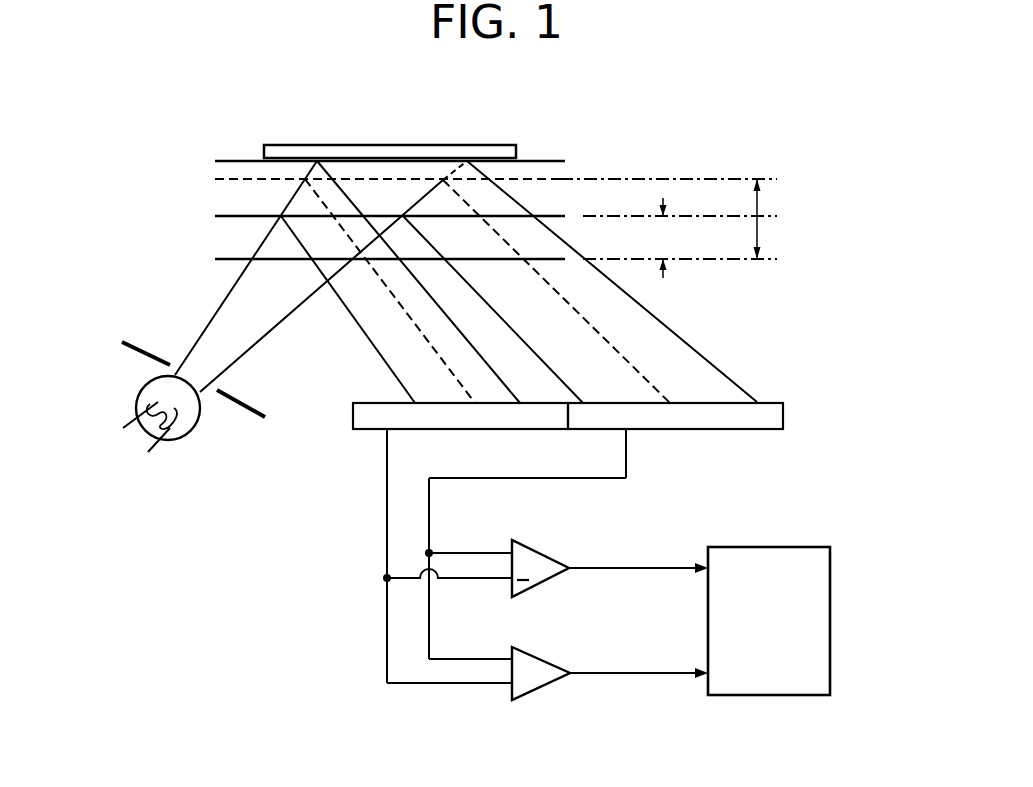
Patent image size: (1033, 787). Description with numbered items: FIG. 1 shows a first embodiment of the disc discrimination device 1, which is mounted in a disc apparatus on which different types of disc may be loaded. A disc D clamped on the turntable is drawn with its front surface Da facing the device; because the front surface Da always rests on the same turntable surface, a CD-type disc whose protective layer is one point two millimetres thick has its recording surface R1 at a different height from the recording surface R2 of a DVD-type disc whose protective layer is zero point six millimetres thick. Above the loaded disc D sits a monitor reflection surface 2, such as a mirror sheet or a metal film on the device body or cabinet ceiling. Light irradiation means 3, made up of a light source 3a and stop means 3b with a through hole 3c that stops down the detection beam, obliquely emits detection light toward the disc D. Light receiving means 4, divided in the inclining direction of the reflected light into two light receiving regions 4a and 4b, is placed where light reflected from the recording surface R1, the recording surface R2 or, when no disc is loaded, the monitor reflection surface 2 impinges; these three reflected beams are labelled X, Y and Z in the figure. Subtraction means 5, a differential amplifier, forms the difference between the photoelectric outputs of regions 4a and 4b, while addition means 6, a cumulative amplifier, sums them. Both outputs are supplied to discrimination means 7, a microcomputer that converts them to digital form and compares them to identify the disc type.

The disc discrimination device 1 is at (478, 399).
The monitor reflection surface 2 is at (387, 158).
The light irradiation means 3 is at (200, 441).
The light source 3a is at (136, 388).
The stop means 3b is at (240, 398).
The through hole 3c is at (198, 372).
The light receiving means 4 is at (591, 447).
The light receiving region 4a is at (710, 429).
The light receiving region 4b is at (366, 429).
The subtraction means 5 is at (553, 558).
The addition means 6 is at (553, 663).
The discrimination means 7 is at (773, 547).
The disc D is at (195, 158).
The front surface of the disc Da is at (549, 259).
The recording surface R1 is at (532, 180).
The recording surface R2 is at (520, 215).
The light spot position X is at (437, 350).
The light spot position Y is at (487, 302).
The light spot position Z is at (508, 387).